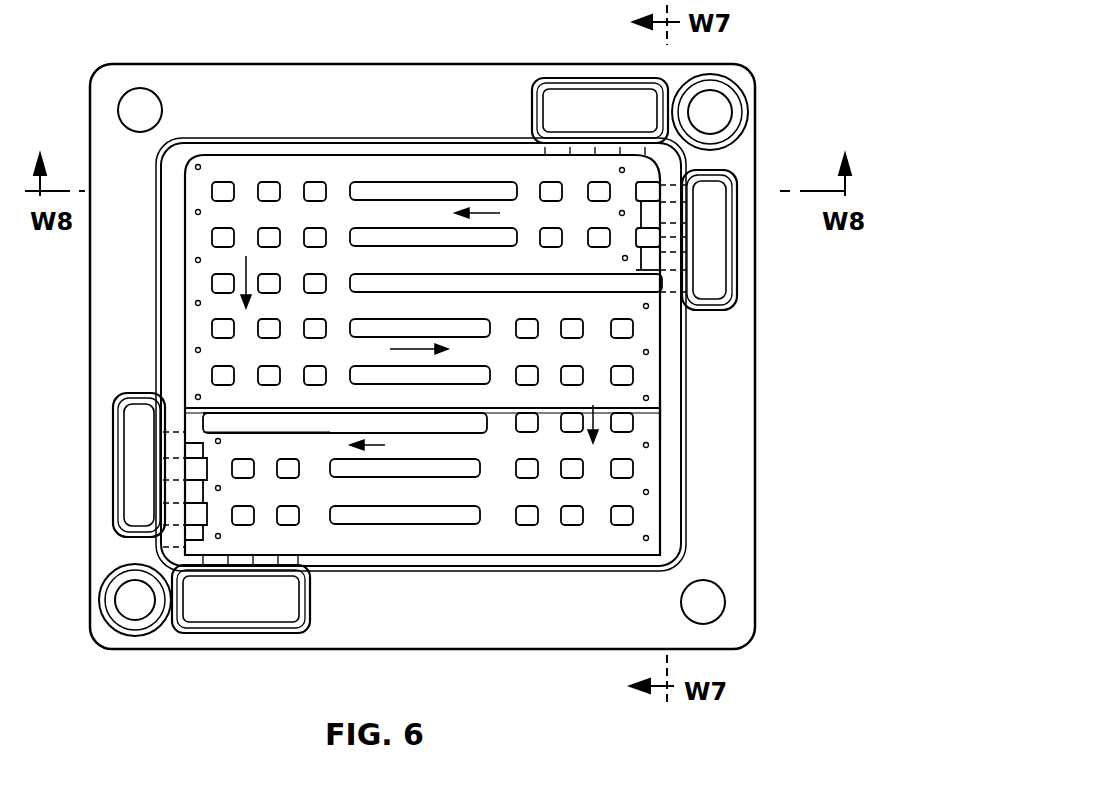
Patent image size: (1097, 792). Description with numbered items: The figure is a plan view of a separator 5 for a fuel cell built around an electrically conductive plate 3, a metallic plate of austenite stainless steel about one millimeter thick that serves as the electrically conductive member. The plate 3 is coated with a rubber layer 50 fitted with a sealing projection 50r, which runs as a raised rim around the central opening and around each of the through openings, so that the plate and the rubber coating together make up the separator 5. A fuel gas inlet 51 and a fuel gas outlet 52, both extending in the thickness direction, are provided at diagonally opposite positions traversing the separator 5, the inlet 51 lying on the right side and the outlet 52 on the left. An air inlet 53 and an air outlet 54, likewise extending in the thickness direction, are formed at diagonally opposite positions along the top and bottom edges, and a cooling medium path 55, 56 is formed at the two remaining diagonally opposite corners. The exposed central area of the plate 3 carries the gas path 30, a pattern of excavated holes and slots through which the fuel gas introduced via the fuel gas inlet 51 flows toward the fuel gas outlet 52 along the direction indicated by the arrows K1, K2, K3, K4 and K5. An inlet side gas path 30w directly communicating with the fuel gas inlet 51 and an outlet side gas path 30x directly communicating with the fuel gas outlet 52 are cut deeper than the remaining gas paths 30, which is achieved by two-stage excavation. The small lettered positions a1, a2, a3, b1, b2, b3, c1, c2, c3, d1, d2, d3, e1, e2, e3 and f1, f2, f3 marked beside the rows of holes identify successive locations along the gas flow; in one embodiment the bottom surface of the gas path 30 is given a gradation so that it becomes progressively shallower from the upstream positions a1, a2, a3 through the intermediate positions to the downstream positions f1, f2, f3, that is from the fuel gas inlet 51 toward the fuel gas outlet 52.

The electrically conductive plate 3 is at (646, 422).
The separator 5 is at (760, 484).
The gas path 30 is at (247, 192).
The inlet side gas path 30w is at (647, 216).
The outlet side gas path 30x is at (203, 443).
The rubber layer 50 is at (735, 519).
The sealing projection 50r is at (532, 88).
The fuel gas inlet 51 is at (712, 288).
The fuel gas outlet 52 is at (135, 446).
The air inlet 53 is at (622, 95).
The air outlet 54 is at (240, 607).
The cooling medium path 55 is at (722, 112).
The cooling medium path 56 is at (120, 602).
The arrow K1 is at (500, 213).
The arrow K2 is at (250, 266).
The arrow K3 is at (393, 350).
The arrow K4 is at (593, 405).
The arrow K5 is at (385, 445).
The position a1 is at (640, 181).
The position a2 is at (630, 229).
The position a3 is at (623, 261).
The position b1 is at (216, 181).
The position b2 is at (216, 227).
The position b3 is at (216, 273).
The position c1 is at (215, 318).
The position c2 is at (215, 365).
The position c3 is at (228, 402).
The position d1 is at (629, 319).
The position d2 is at (629, 365).
The position d3 is at (629, 412).
The position e1 is at (629, 458).
The position e2 is at (629, 505).
The position e3 is at (635, 544).
The position f1 is at (235, 454).
The position f2 is at (235, 502).
The position f3 is at (238, 540).